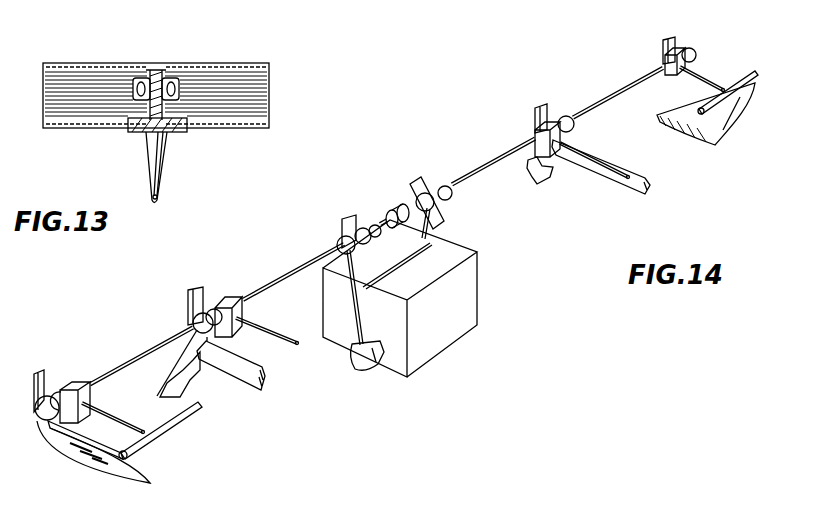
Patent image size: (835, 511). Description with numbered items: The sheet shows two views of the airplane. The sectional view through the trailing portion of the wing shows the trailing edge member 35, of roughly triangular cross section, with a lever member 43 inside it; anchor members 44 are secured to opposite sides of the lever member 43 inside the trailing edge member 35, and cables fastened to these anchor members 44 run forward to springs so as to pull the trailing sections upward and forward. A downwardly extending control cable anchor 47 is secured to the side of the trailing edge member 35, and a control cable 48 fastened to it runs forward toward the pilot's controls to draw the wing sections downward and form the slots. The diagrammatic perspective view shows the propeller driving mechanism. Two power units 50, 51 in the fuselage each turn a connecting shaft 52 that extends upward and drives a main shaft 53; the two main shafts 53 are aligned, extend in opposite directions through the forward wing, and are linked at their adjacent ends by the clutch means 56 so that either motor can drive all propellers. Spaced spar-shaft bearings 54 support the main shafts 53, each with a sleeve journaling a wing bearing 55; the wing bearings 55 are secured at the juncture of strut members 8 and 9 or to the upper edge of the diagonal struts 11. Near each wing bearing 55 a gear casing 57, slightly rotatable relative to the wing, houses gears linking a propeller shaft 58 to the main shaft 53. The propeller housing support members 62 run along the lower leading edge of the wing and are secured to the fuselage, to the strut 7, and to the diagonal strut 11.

In FIG. 13, the trailing edge member 35 is at (215, 78).
In FIG. 13, the anchor member 44 is at (172, 86).
In FIG. 13, the lever member 43 is at (131, 131).
In FIG. 13, the control cable anchor 47 is at (150, 146).
In FIG. 13, the control cable 48 is at (158, 196).
In FIG. 14, the power unit 50 is at (438, 350).
In FIG. 14, the power unit 51 is at (332, 290).
In FIG. 14, the connecting shaft 52 is at (360, 300).
In FIG. 14, the main shaft 53 is at (126, 360).
In FIG. 14, the spar-shaft bearing 54 is at (50, 380).
In FIG. 14, the wing bearing 55 is at (45, 420).
In FIG. 14, the clutch means 56 is at (400, 207).
In FIG. 14, the gear casing 57 is at (76, 385).
In FIG. 14, the propeller shaft 58 is at (140, 430).
In FIG. 14, the propeller housing support member 62 is at (182, 430).
In FIG. 14, the diagonal strut 11 is at (117, 468).
In FIG. 14, the forward strut member 7 is at (190, 380).
In FIG. 14, the forward strut member 8 is at (234, 375).
In FIG. 14, the forward strut member 9 is at (545, 177).